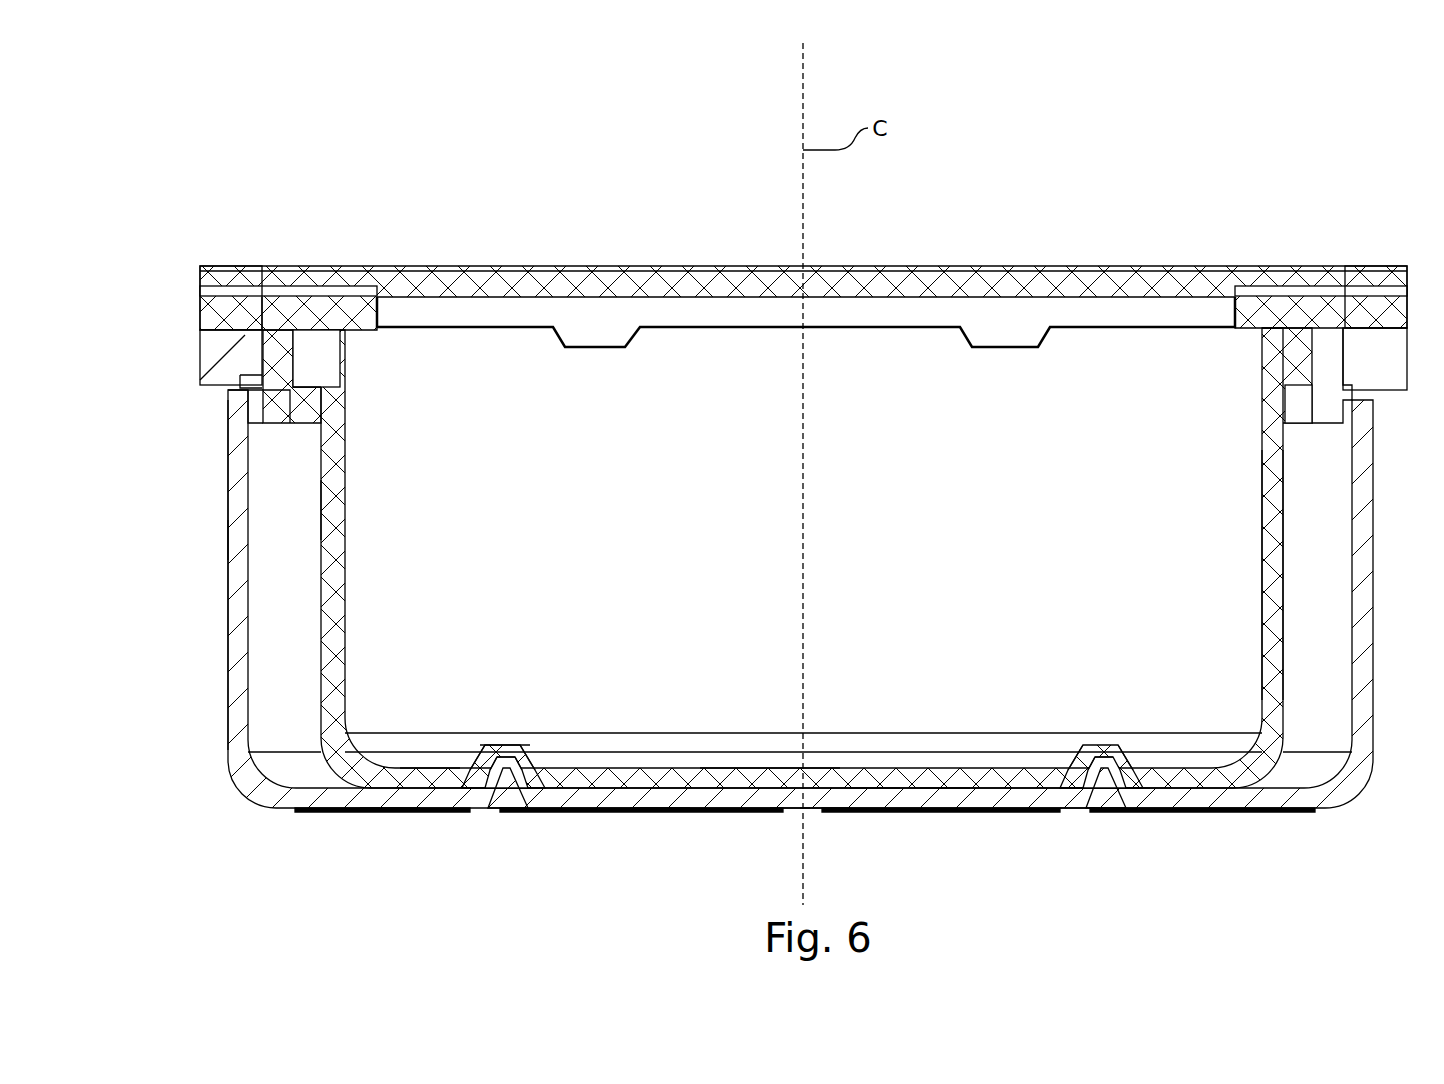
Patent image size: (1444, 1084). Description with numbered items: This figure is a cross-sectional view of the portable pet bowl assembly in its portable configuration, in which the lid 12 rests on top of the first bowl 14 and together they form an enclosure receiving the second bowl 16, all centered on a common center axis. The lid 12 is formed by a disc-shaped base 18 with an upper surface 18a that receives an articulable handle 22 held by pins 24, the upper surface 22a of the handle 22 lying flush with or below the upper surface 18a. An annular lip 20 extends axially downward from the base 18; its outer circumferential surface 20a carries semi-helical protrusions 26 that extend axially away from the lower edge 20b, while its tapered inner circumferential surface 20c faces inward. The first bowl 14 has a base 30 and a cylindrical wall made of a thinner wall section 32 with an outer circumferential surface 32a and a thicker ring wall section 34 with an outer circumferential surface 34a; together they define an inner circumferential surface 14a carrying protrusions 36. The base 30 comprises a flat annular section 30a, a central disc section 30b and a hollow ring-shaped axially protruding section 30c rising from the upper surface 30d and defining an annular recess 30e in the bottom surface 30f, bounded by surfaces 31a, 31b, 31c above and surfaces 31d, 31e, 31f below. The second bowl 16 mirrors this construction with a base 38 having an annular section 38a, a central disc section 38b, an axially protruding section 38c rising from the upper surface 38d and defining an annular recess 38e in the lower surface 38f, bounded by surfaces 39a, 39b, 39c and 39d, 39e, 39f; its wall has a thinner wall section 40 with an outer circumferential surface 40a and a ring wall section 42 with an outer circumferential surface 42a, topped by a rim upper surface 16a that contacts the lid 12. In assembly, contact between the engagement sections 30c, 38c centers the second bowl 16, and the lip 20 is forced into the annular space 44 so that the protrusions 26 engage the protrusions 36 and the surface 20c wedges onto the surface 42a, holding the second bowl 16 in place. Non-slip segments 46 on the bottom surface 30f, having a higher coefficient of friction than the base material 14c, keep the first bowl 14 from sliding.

The lid 12 is at (956, 263).
The first bowl 14 is at (1352, 800).
The inner circumferential surface 14a is at (248, 482).
The base material 14c is at (876, 798).
The second bowl 16 is at (1262, 535).
The upper surface 16a is at (1278, 345).
The base 18 is at (694, 263).
The upper surface 18a is at (420, 266).
The annular lip 20 is at (1322, 435).
The outer circumferential surface 20a is at (248, 328).
The lower edge 20b is at (246, 457).
The inner circumferential surface 20c is at (300, 360).
The handle 22 is at (1268, 262).
The upper surface 22a is at (322, 292).
The pins 24 is at (305, 296).
The protrusion 26 is at (260, 395).
The base 30 is at (548, 812).
The radially outer flat annular section 30a is at (392, 808).
The central disc section 30b is at (822, 812).
The axially protruding section 30c is at (1082, 812).
The upper surface 30d is at (660, 812).
The annular recess 30e is at (1103, 812).
The bottom surface 30f is at (790, 812).
The upper radially outer axially extending surface 31a is at (490, 790).
The upper radially extending surface 31b is at (500, 742).
The upper radially inner axially extending surface 31c is at (538, 800).
The lower radially outer axially extending surface 31d is at (497, 800).
The lower radially extending surface 31e is at (505, 800).
The lower radially inner axially extending surface 31f is at (520, 795).
The first radially thinner wall section 32 is at (228, 600).
The outer circumferential surface 32a is at (228, 540).
The ring wall section 34 is at (200, 357).
The outer circumferential surface 34a is at (200, 333).
The protrusion 36 is at (243, 388).
The base 38 is at (612, 770).
The radially outer flat annular section 38a is at (428, 762).
The central disc section 38b is at (745, 768).
The axially protruding section 38c is at (505, 712).
The upper surface 38d is at (812, 768).
The annular recess 38e is at (1120, 798).
The lower surface 38f is at (946, 790).
The upper radially outer axially extending surface 39a is at (1130, 752).
The upper radially extending surface 39b is at (1102, 742).
The upper radially inner axially extending surface 39c is at (1080, 760).
The lower radially outer axially extending surface 39d is at (1115, 745).
The lower radially extending surface 39e is at (1088, 745).
The lower radially inner axially extending surface 39f is at (1085, 800).
The first radially thinner wall section 40 is at (352, 538).
The outer circumferential surface 40a is at (322, 508).
The ring wall section 42 is at (355, 362).
The outer circumferential surface 42a is at (305, 392).
The annular space 44 is at (258, 342).
The segments 46 is at (700, 812).